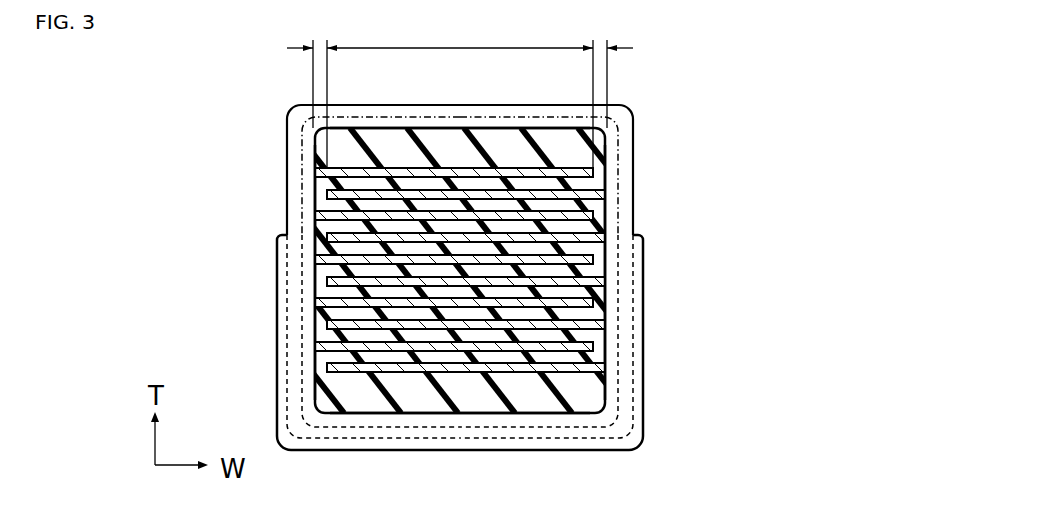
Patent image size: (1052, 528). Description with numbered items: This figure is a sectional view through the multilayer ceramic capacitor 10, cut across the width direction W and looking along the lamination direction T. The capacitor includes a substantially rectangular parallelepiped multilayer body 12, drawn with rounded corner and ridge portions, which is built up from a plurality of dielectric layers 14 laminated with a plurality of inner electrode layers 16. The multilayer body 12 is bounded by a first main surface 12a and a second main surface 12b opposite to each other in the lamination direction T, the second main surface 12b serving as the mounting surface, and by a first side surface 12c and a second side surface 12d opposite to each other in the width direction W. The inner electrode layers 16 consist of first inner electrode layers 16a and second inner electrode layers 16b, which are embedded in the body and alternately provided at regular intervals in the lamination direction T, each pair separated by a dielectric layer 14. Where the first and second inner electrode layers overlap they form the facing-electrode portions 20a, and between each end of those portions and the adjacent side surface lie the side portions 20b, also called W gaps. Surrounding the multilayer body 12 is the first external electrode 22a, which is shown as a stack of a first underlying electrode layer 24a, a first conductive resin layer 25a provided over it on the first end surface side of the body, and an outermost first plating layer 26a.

The multilayer ceramic capacitor 10 is at (240, 72).
The multilayer body 12 is at (499, 124).
The first main surface 12a is at (432, 127).
The second main surface 12b is at (493, 414).
The first side surface 12c is at (312, 299).
The second side surface 12d is at (607, 356).
The dielectric layer 14 is at (420, 335).
The inner electrode layer 16 is at (860, 370).
The first inner electrode layer 16a is at (328, 170).
The second inner electrode layer 16b is at (593, 192).
The facing-electrode portion 20a is at (460, 89).
The side portion 20b is at (460, 68).
The first external electrode 22a is at (655, 277).
The first underlying electrode layer 24a is at (613, 277).
The first conductive resin layer 25a is at (623, 263).
The first plating layer 26a is at (628, 239).